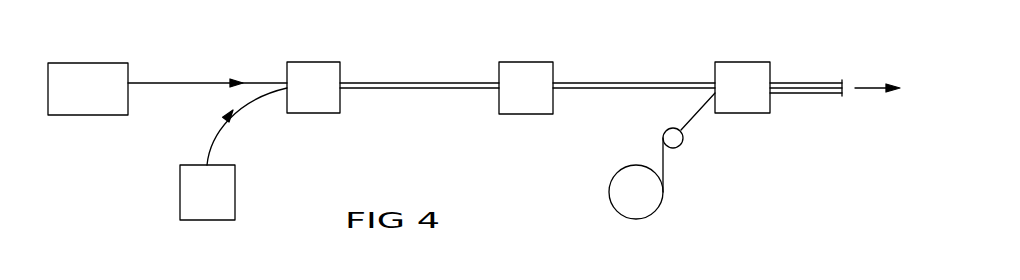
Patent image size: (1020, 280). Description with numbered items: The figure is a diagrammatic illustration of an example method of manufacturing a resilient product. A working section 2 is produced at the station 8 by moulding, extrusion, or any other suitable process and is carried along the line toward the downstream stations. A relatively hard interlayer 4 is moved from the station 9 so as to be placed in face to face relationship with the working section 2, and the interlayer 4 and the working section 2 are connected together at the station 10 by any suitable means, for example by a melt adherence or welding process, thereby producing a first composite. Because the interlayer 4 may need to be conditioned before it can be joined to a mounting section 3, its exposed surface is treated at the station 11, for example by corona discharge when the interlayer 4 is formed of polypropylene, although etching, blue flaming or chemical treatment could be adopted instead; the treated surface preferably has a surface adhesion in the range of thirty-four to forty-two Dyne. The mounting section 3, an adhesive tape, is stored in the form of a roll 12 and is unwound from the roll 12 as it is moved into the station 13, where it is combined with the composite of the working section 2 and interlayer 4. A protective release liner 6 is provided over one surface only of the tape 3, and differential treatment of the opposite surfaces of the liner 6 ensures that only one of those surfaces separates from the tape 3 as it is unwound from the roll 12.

The working section 2 is at (191, 83).
The mounting section 3 is at (655, 152).
The interlayer 4 is at (210, 145).
The protective release liner 6 is at (690, 108).
The station 8 is at (102, 80).
The station 9 is at (195, 190).
The station 10 is at (308, 77).
The station 11 is at (525, 77).
The roll 12 is at (622, 192).
The station 13 is at (735, 75).